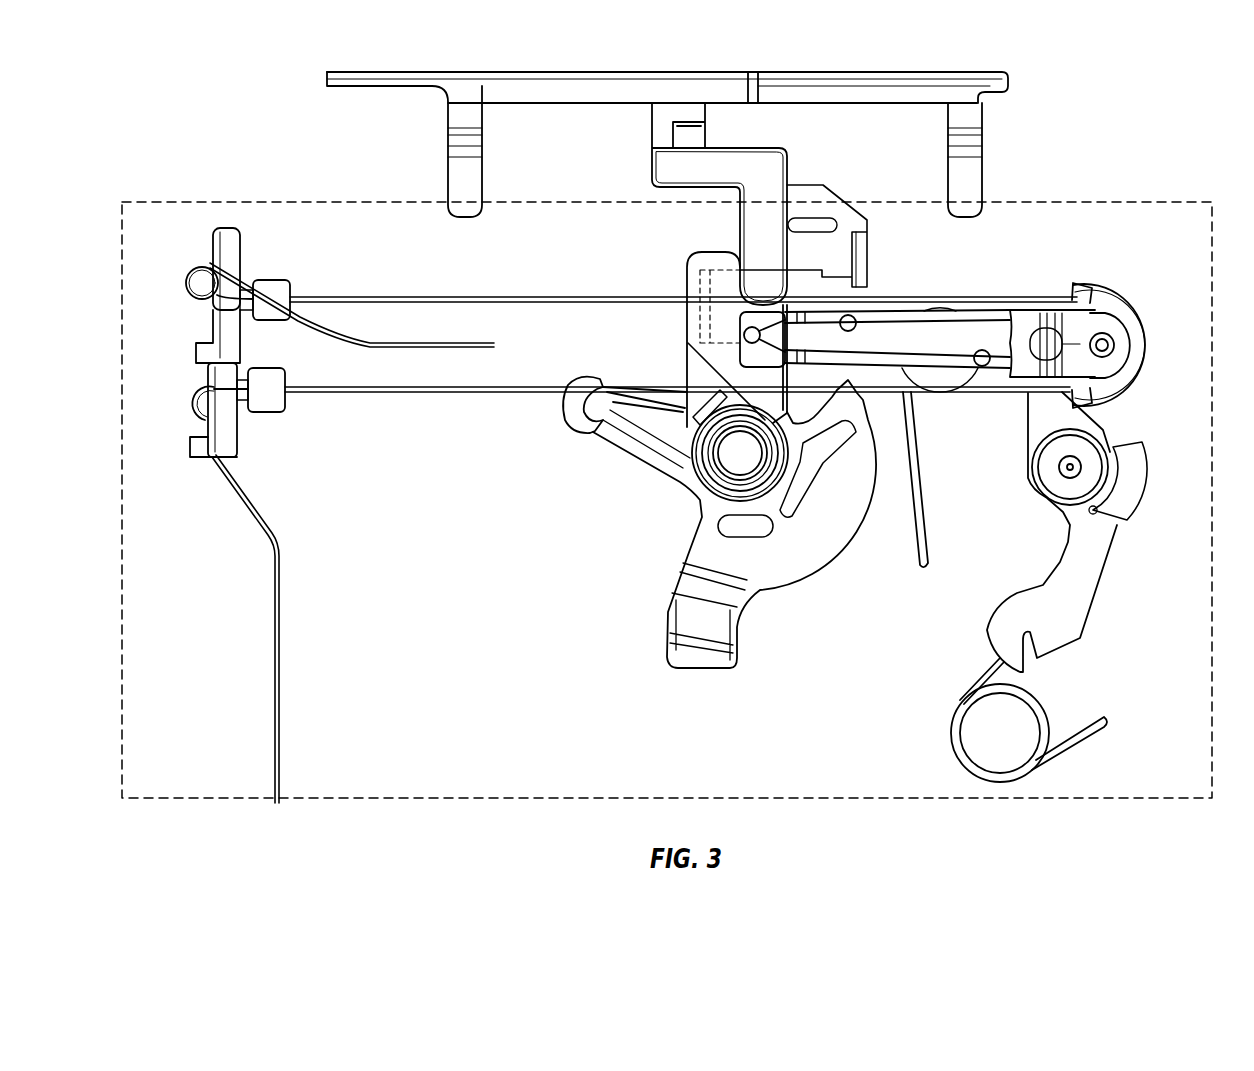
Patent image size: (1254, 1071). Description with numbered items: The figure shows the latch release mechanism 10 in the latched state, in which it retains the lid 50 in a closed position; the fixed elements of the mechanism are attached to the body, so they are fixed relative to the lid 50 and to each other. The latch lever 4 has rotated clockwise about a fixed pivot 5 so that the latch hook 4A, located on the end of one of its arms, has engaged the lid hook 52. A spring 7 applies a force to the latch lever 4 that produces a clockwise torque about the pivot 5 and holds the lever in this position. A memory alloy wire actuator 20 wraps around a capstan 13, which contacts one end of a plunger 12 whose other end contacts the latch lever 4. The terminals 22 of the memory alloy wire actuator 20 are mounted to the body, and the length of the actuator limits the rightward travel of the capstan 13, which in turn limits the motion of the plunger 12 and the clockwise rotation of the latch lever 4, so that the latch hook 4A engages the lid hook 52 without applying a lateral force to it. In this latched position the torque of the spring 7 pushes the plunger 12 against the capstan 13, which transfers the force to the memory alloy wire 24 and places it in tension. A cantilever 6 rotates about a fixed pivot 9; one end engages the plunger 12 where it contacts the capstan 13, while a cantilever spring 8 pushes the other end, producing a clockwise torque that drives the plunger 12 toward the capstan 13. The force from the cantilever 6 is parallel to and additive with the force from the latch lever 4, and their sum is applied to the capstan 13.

The latch release mechanism 10 is at (208, 197).
The memory alloy wire actuator 20 is at (643, 519).
The terminals 22 is at (200, 292).
The memory alloy wire 24 is at (395, 393).
The latch lever 4 is at (705, 535).
The latch hook 4A is at (690, 262).
The fixed pivot 5 is at (738, 455).
The cantilever 6 is at (1097, 558).
The spring 7 is at (913, 545).
The cantilever spring 8 is at (1030, 702).
The fixed pivot 9 is at (1082, 465).
The plunger 12 is at (931, 340).
The capstan 13 is at (1120, 330).
The lid 50 is at (727, 66).
The lid hook 52 is at (773, 167).